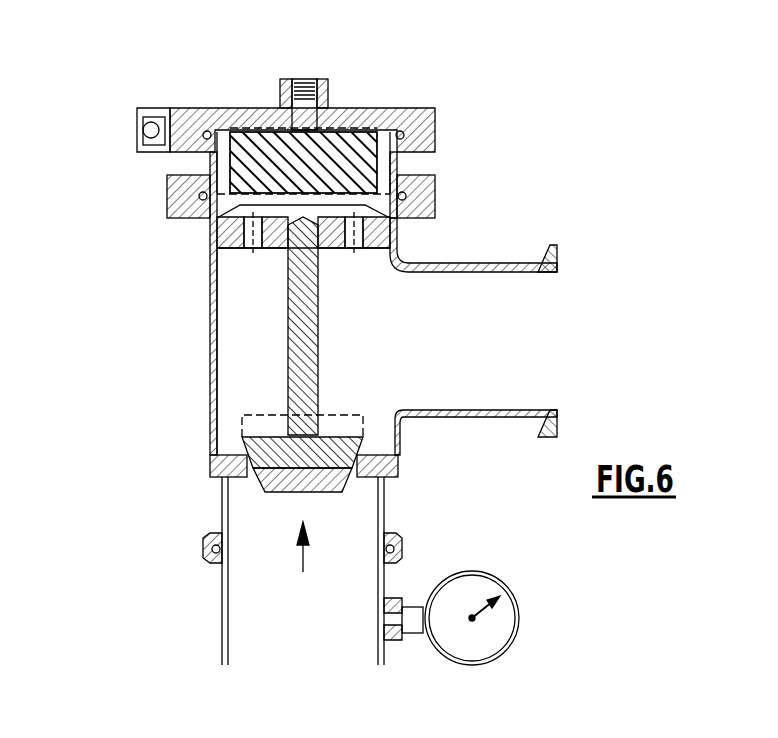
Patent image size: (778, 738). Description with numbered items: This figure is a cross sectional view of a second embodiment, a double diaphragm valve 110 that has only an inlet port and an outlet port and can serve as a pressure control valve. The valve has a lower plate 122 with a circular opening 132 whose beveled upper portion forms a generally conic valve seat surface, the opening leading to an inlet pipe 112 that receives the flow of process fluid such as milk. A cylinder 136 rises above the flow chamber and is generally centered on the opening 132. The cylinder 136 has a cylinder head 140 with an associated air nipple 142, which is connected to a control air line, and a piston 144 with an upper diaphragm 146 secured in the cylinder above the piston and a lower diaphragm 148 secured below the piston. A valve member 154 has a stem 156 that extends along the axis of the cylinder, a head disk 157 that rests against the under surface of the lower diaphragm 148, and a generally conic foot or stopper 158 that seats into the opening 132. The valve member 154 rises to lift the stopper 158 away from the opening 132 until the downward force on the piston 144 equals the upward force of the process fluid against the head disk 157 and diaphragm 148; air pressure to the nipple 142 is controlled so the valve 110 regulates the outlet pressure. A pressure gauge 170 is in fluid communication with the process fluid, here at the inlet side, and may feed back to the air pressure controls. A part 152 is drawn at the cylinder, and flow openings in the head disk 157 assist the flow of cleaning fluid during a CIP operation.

The double diaphragm valve 110 is at (92, 222).
The inlet pipe 112 is at (206, 620).
The lower plate 122 is at (210, 479).
The circular opening 132 is at (240, 446).
The cylinder 136 is at (442, 166).
The cylinder head 140 is at (364, 108).
The air nipple 142 is at (330, 82).
The piston 144 is at (504, 410).
The upper diaphragm 146 is at (258, 137).
The lower diaphragm 148 is at (226, 224).
The gland flange 152 is at (228, 162).
The valve member 154 is at (385, 350).
The stem 156 is at (289, 356).
The head disk 157 is at (328, 249).
The stopper 158 is at (330, 433).
The pressure gauge 170 is at (497, 577).